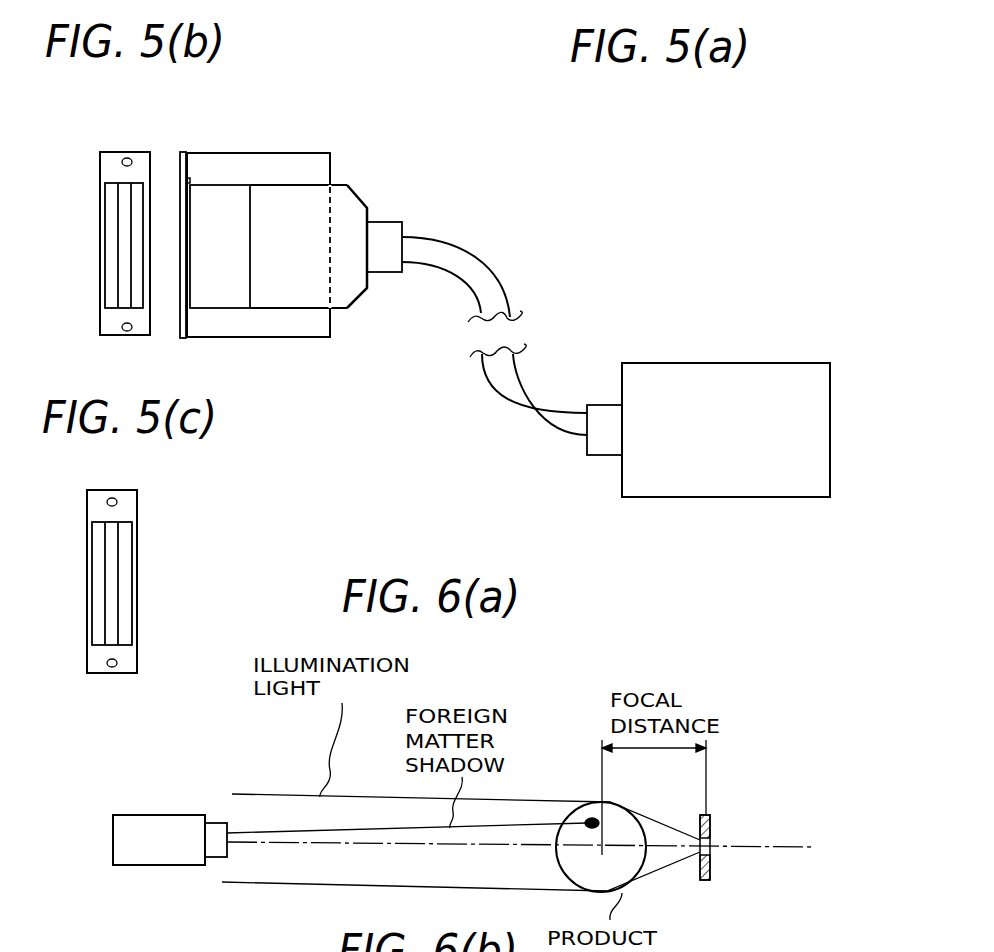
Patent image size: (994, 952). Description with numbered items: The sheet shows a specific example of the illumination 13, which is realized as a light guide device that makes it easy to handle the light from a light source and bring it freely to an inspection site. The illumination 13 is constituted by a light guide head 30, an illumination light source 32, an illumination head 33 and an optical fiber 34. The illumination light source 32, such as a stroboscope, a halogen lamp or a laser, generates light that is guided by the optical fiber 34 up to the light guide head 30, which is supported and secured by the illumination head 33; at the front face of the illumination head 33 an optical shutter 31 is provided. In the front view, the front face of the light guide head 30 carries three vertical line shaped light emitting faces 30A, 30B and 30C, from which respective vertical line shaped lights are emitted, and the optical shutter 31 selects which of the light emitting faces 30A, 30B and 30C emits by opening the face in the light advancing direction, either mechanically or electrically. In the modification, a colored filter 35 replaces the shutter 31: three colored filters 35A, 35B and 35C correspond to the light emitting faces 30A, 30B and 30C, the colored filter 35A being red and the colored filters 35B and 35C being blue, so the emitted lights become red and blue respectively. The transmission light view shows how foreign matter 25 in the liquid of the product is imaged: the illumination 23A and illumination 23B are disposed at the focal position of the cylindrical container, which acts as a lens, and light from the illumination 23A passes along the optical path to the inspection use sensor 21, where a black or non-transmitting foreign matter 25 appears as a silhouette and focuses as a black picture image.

In FIG. 5A, the illumination 13 is at (503, 232).
In FIG. 6A, the inspection use sensor 21 is at (143, 823).
In FIG. 6A, the illumination (linear shaped light emitting face) 23A is at (712, 842).
In FIG. 6A, the illumination 23B is at (732, 897).
In FIG. 6A, the foreign matter 25 is at (587, 818).
In FIG. 5A, the light guide head 30 is at (355, 207).
In FIG. 5B, the light emitting face 30A is at (122, 185).
In FIG. 5B, the light emitting face 30B is at (142, 180).
In FIG. 5B, the light emitting face 30C is at (105, 187).
In FIG. 5A, the optical shutter 31 is at (190, 180).
In FIG. 5A, the illumination light source 32 is at (665, 378).
In FIG. 5A, the illumination head 33 is at (248, 328).
In FIG. 5A, the optical fiber 34 is at (513, 413).
In FIG. 5C, the colored filter 35 is at (157, 529).
In FIG. 5C, the colored filter 35A is at (107, 530).
In FIG. 5C, the colored filter 35B is at (128, 520).
In FIG. 5C, the colored filter 35C is at (92, 537).